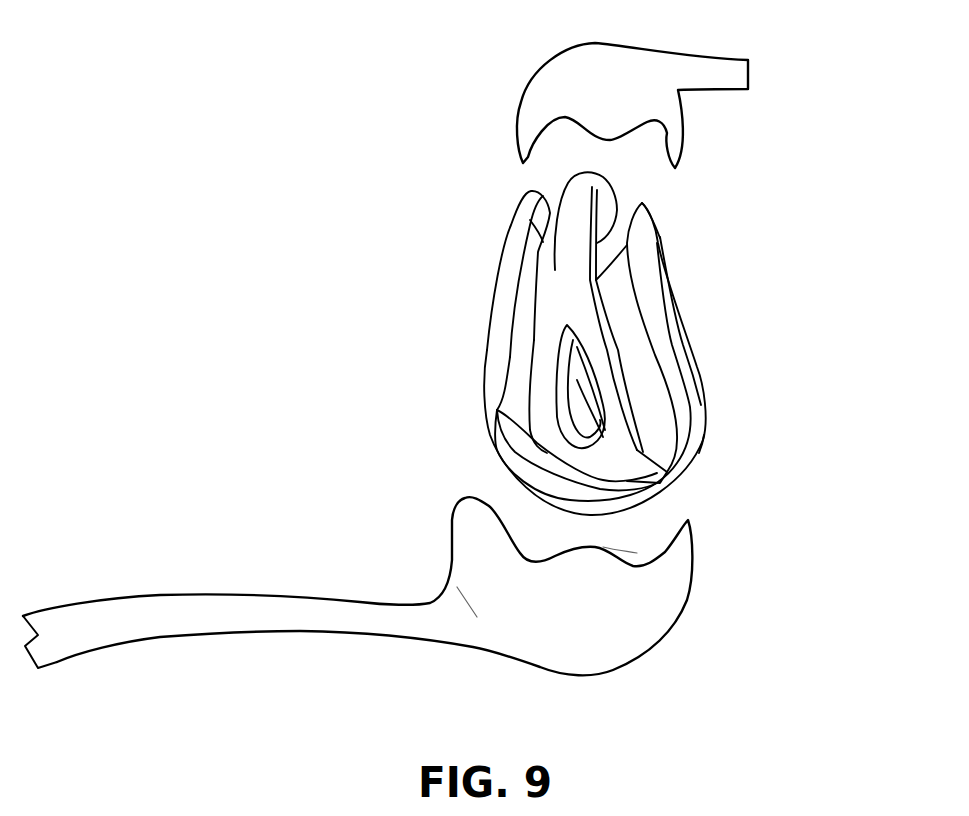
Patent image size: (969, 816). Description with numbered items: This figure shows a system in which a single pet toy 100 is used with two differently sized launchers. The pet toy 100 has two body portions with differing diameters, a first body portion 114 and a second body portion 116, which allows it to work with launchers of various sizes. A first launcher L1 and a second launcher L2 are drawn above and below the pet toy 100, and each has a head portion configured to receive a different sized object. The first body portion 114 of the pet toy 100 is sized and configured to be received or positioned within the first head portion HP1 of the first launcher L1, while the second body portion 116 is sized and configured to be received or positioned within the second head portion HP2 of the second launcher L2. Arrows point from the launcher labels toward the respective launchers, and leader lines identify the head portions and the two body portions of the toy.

The pet toy 100 is at (397, 322).
The first body portion 114 is at (668, 255).
The second body portion 116 is at (696, 447).
The first head portion HP1 is at (551, 63).
The second head portion HP2 is at (647, 638).
The first launcher L1 is at (483, 117).
The second launcher L2 is at (807, 635).